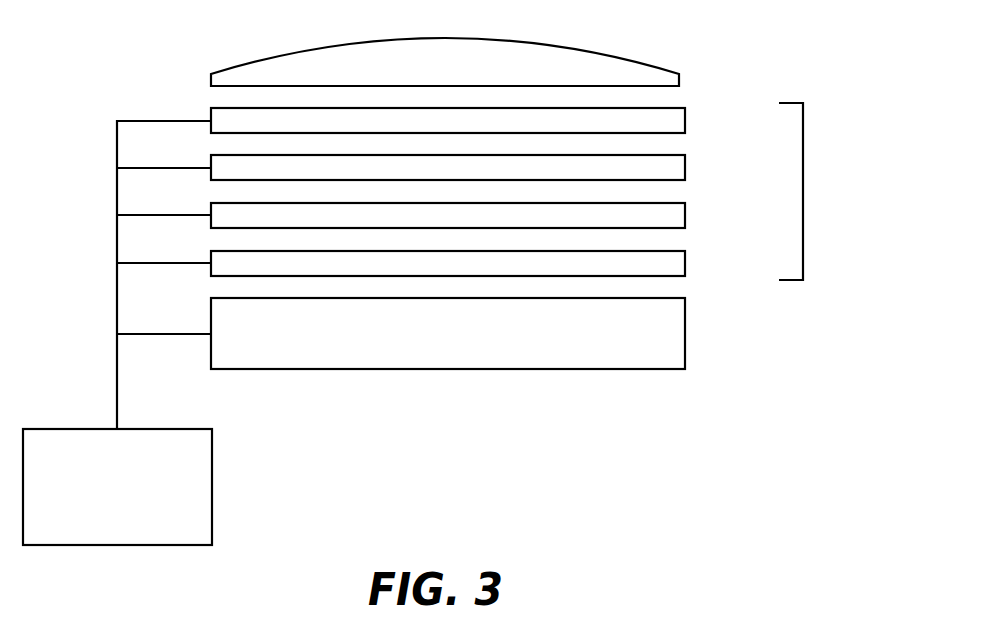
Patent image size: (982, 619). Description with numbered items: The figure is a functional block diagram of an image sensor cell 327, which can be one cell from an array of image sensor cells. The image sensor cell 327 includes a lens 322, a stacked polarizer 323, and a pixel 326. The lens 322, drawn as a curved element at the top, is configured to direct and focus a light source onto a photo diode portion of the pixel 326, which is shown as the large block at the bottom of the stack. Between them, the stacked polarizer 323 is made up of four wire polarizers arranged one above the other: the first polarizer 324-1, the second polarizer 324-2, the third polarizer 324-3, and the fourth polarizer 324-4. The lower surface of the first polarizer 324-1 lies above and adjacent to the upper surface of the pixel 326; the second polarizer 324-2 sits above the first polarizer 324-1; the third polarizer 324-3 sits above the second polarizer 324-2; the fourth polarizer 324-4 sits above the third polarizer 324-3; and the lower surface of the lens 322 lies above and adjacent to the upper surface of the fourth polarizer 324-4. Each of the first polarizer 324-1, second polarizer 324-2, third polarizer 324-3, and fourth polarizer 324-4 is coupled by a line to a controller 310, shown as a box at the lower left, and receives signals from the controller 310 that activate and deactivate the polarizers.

The image sensor cell 327 is at (140, 32).
The lens 322 is at (578, 58).
The fourth polarizer 324-4 is at (672, 119).
The third polarizer 324-3 is at (672, 166).
The second polarizer 324-2 is at (672, 214).
The first polarizer 324-1 is at (672, 262).
The stacked polarizer 323 is at (803, 193).
The pixel 326 is at (672, 334).
The controller 310 is at (200, 488).